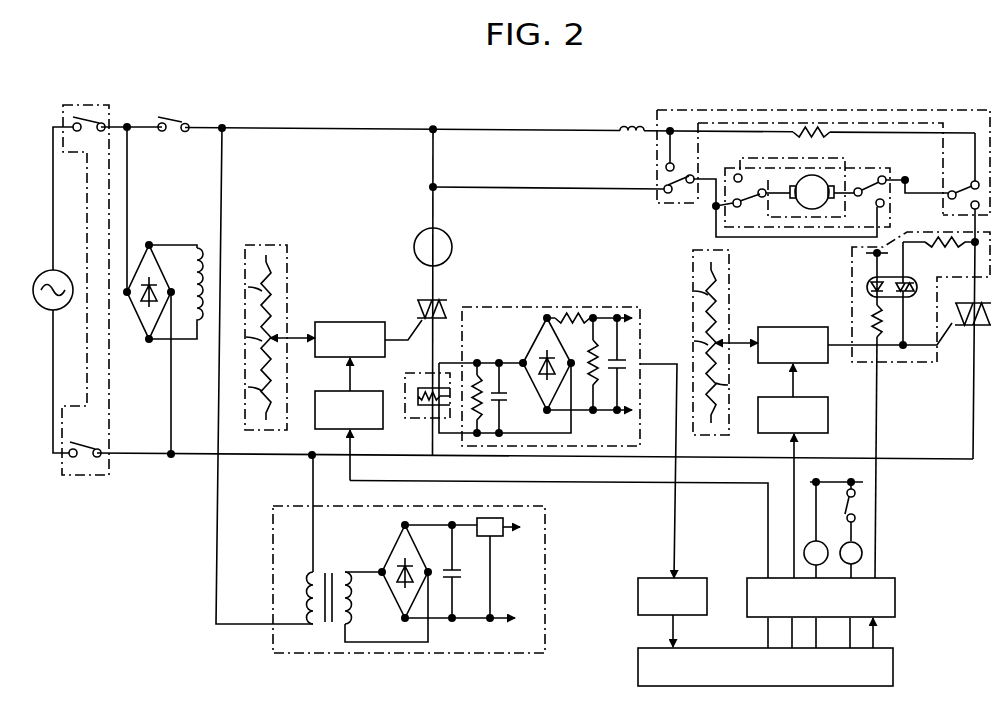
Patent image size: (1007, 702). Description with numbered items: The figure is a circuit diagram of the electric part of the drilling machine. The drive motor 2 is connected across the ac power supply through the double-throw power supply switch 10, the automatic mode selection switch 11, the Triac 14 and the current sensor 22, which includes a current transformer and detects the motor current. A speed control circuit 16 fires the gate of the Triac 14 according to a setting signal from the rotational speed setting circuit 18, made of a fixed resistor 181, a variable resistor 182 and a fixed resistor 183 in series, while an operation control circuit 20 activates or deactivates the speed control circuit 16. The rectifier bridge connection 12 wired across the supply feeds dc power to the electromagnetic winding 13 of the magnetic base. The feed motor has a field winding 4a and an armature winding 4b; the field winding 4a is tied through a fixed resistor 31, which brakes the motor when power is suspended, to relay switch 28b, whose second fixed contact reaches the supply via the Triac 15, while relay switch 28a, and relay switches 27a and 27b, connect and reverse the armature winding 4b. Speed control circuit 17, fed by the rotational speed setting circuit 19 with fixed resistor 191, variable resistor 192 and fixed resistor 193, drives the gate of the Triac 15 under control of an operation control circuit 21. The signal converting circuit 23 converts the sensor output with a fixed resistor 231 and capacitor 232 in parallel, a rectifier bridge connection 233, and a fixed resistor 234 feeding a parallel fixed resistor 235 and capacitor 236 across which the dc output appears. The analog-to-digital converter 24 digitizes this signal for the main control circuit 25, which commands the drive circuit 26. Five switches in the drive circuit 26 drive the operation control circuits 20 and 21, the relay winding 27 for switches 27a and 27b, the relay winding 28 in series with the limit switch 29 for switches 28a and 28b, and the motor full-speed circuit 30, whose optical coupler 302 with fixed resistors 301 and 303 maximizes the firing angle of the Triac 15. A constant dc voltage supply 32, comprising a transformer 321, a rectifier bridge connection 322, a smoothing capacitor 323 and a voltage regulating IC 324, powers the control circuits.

The drive motor 2 is at (452, 247).
The field winding 4a is at (627, 140).
The armature winding 4b is at (805, 174).
The power supply switch 10 is at (87, 477).
The automatic mode selection switch 11 is at (173, 133).
The rectifier bridge connection 12 is at (131, 320).
The electromagnetic winding 13 is at (195, 322).
The semiconductor control element 14 is at (418, 300).
The semiconductor control element 15 is at (978, 328).
The speed control circuit 16 is at (346, 322).
The speed control circuit 17 is at (784, 326).
The rotational speed setting circuit 18 is at (268, 318).
The fixed resistor 181 is at (248, 287).
The variable resistor 182 is at (246, 337).
The fixed resistor 183 is at (248, 387).
The rotational speed setting circuit 19 is at (711, 340).
The fixed resistor 191 is at (688, 293).
The variable resistor 192 is at (688, 342).
The fixed resistor 193 is at (732, 385).
The operation control circuit 20 is at (385, 425).
The operation control circuit 21 is at (828, 420).
The current sensor 22 is at (405, 382).
The signal converting circuit 23 is at (558, 428).
The fixed resistor 231 is at (488, 423).
The capacitor 232 is at (507, 405).
The rectifier bridge connection 233 is at (535, 327).
The fixed resistor 234 is at (574, 310).
The fixed resistor 235 is at (600, 378).
The capacitor 236 is at (624, 374).
The analog-to-digital converter 24 is at (638, 590).
The main control circuit 25 is at (638, 664).
The drive circuit 26 is at (895, 603).
The relay winding 27 is at (803, 548).
The relay switch 27a is at (750, 171).
The relay switch 27b is at (862, 171).
The relay winding 28 is at (862, 553).
The relay switch 28a is at (683, 196).
The relay switch 28b is at (950, 185).
The switch 29 is at (857, 504).
The motor full-speed circuit 30 is at (901, 405).
The fixed resistor 301 is at (868, 318).
The optical coupler 302 is at (865, 283).
The fixed resistor 303 is at (943, 249).
The fixed resistor 31 is at (823, 160).
The constant dc voltage supply 32 is at (417, 590).
The transformer 321 is at (325, 632).
The rectifier bridge connection 322 is at (396, 608).
The smoothing capacitor 323 is at (456, 582).
The voltage regulating integrated-circuit 324 is at (508, 523).